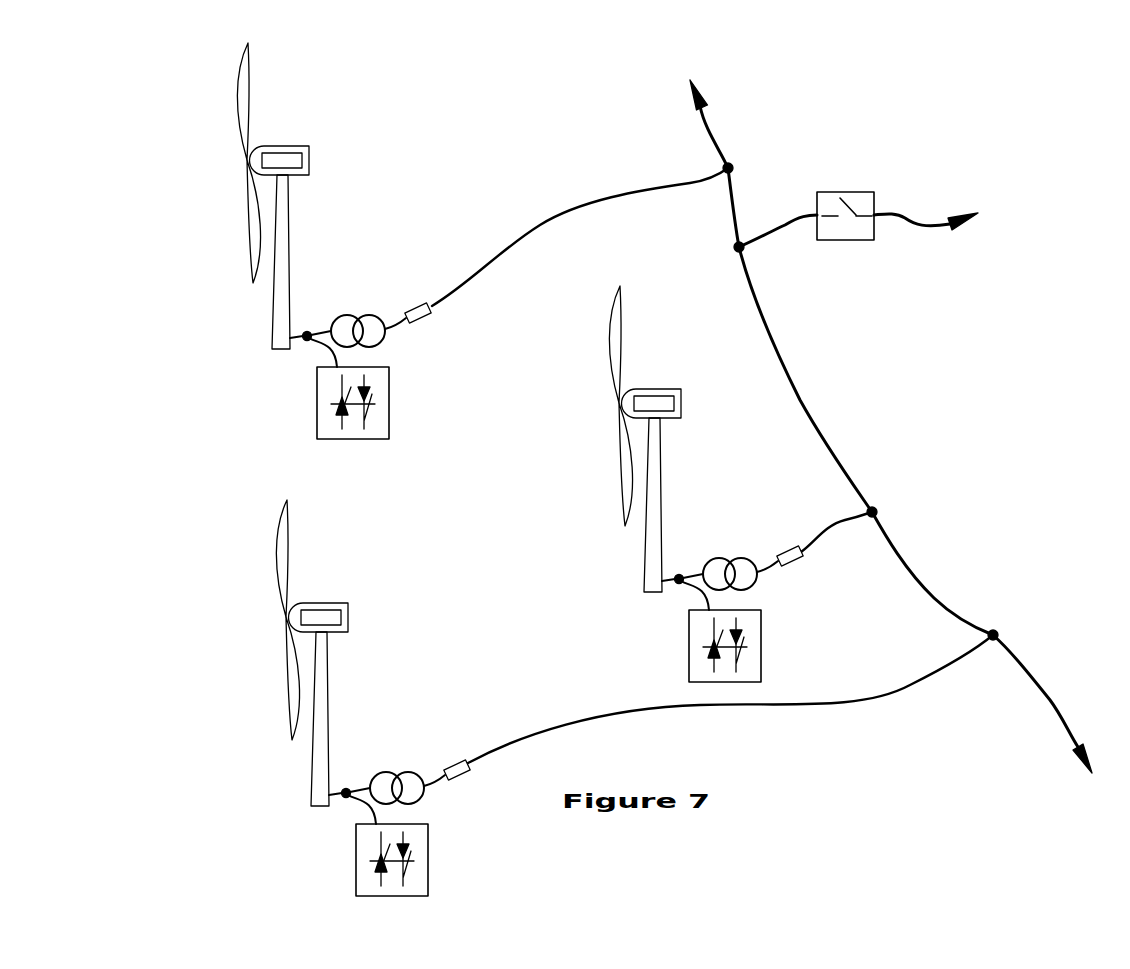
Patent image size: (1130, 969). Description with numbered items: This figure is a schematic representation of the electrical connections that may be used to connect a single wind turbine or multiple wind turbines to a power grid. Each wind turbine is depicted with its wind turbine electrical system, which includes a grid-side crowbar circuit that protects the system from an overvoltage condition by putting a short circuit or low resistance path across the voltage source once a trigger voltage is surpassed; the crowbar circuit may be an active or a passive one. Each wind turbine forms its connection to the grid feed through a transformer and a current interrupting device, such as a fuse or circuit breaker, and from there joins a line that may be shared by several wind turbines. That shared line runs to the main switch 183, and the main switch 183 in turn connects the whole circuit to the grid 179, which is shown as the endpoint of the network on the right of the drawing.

The main switch 183 is at (843, 192).
The grid 179 is at (900, 218).